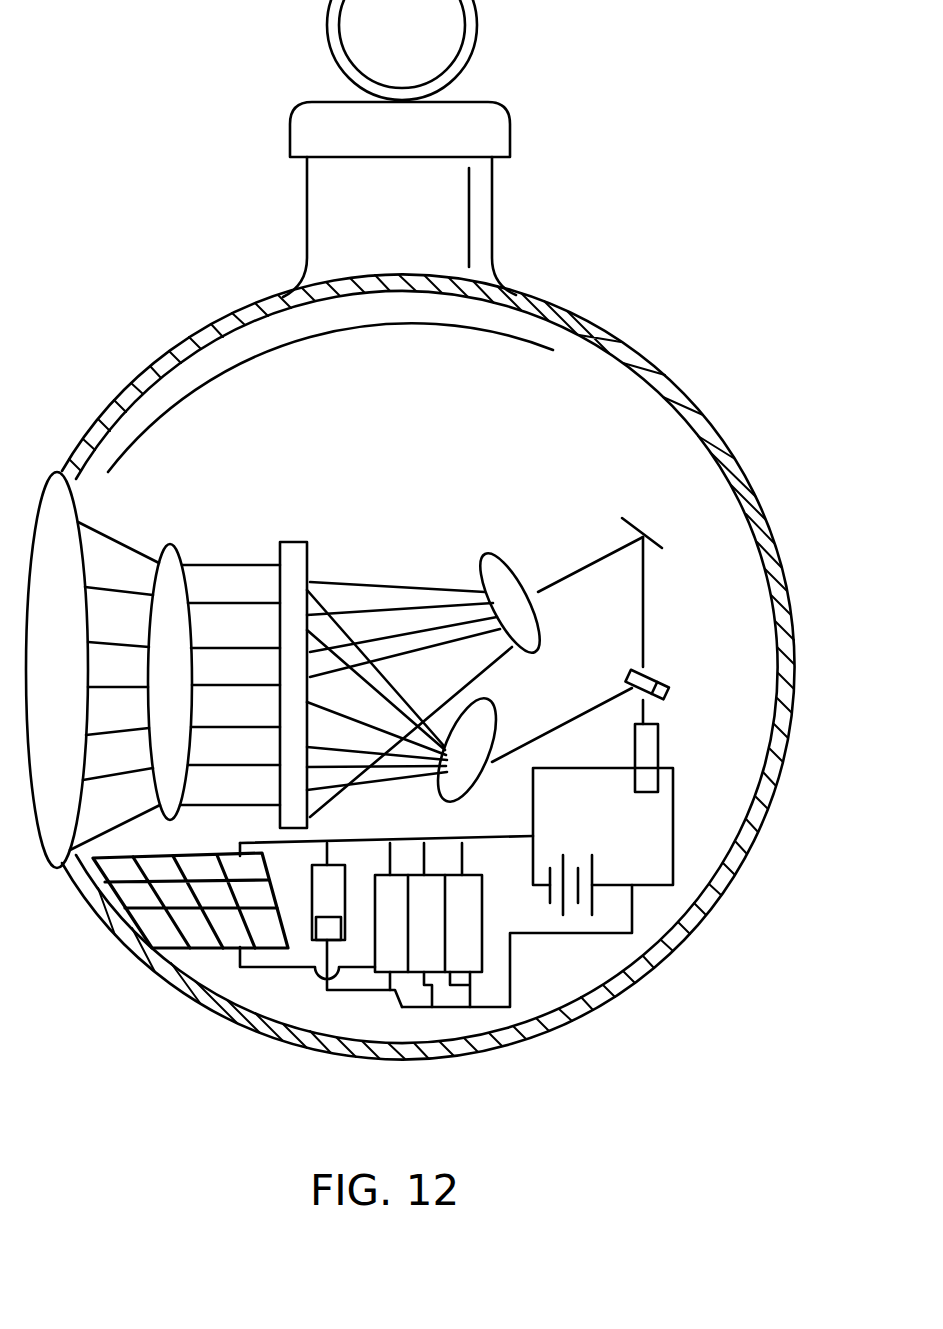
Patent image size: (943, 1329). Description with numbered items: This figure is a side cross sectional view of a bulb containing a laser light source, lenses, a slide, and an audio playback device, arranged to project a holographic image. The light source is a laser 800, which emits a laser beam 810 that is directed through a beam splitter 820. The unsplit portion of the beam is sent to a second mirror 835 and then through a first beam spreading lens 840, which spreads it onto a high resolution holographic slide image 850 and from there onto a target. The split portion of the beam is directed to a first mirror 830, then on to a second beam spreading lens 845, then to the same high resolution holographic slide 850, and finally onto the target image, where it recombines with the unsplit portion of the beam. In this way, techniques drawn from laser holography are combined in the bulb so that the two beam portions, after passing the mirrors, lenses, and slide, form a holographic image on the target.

The laser 800 is at (660, 748).
The laser beam 810 is at (656, 716).
The beam splitter 820 is at (663, 678).
The first mirror 830 is at (505, 765).
The second mirror 835 is at (653, 537).
The first beam spreading lens 840 is at (468, 790).
The second beam spreading lens 845 is at (512, 557).
The high resolution holographic slide image 850 is at (302, 540).